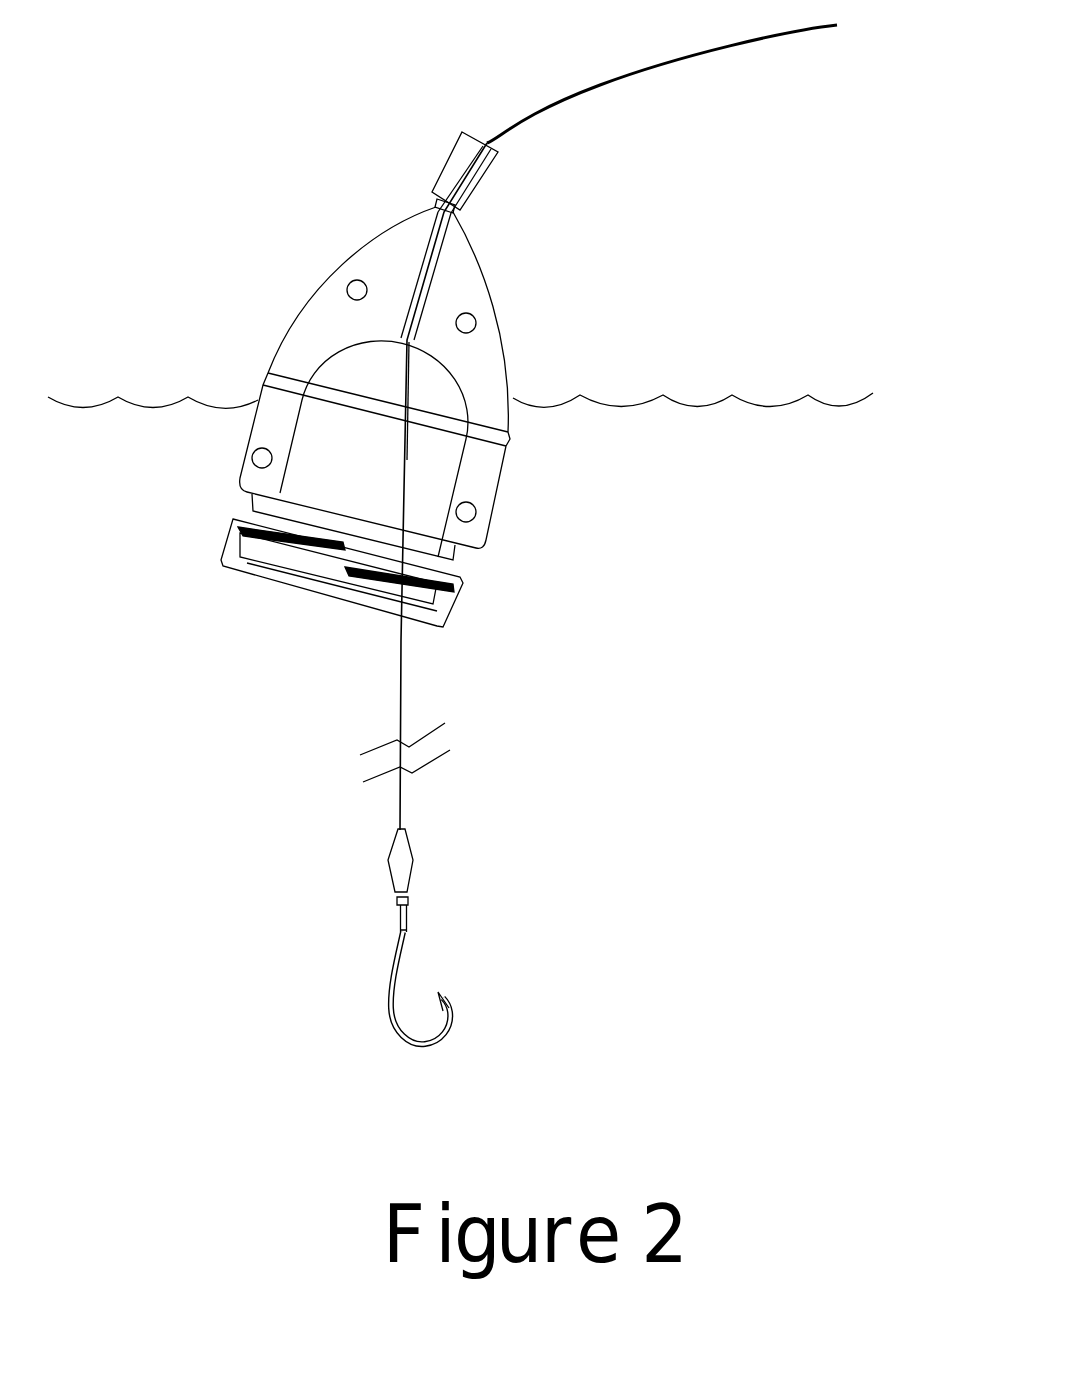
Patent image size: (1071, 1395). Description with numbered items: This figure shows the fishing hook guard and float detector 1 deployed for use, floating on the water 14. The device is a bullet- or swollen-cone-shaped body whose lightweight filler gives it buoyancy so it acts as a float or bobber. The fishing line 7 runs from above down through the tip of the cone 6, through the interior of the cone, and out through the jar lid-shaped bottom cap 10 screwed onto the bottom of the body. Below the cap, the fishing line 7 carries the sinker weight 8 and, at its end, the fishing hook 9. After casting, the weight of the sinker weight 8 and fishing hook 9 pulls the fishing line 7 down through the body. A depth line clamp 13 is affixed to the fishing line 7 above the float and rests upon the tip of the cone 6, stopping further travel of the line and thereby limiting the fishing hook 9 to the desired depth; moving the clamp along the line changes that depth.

The fishing hook guard and float detector 1 is at (320, 290).
The tip of the cone 6 is at (435, 203).
The fishing line 7 is at (613, 76).
The sinker weight 8 is at (381, 861).
The fishing hook 9 is at (388, 1025).
The bottom cap 10 is at (228, 567).
The depth line clamp 13 is at (455, 162).
The water 14 is at (765, 390).